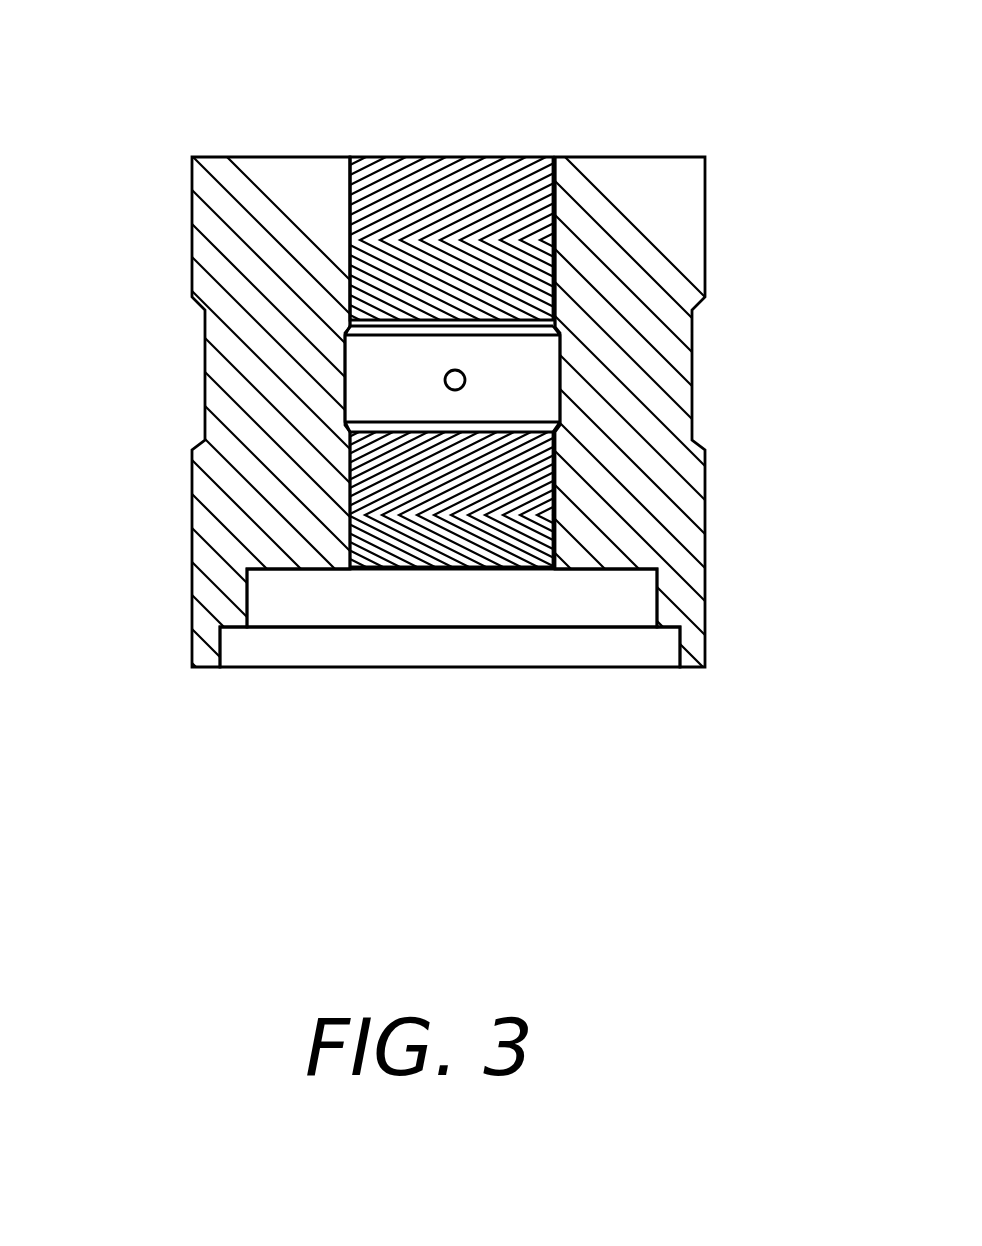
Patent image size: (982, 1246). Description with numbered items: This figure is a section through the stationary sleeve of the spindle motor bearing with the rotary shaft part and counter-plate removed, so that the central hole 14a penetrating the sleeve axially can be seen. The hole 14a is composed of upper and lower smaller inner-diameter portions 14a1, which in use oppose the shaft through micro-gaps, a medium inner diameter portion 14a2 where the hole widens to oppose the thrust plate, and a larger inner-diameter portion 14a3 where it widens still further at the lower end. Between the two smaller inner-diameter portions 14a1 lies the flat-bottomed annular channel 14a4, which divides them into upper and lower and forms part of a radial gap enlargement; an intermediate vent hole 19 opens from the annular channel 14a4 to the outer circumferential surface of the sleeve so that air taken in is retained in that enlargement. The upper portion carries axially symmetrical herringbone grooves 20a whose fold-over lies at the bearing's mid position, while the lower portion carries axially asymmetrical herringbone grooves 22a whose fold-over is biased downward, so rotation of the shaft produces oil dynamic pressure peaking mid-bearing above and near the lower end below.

The central hole 14a is at (388, 143).
The herringbone grooves 20a is at (530, 178).
The herringbone grooves 22a is at (455, 548).
The smaller inner-diameter portions 14a1 is at (555, 252).
The annular channel 14a4 is at (348, 376).
The intermediate vent hole 19 is at (465, 378).
The medium inner diameter portion 14a2 is at (260, 602).
The larger inner-diameter portion 14a3 is at (226, 667).